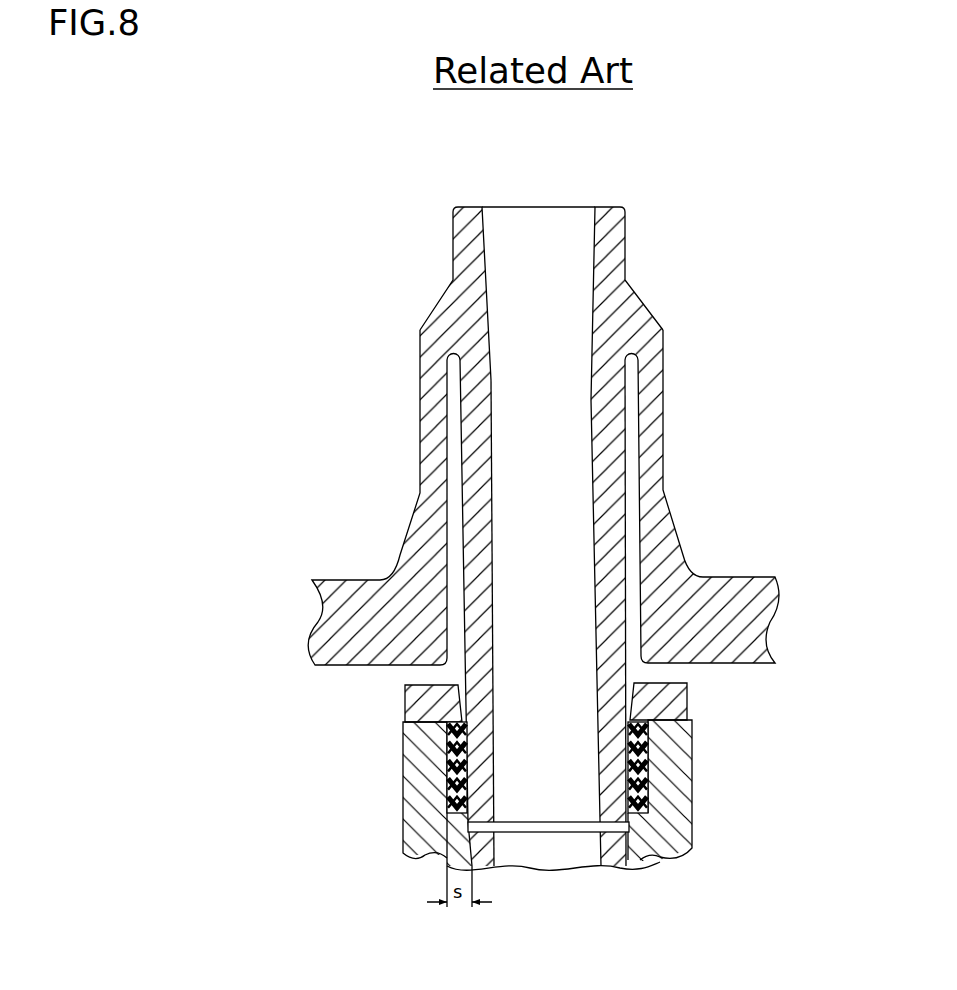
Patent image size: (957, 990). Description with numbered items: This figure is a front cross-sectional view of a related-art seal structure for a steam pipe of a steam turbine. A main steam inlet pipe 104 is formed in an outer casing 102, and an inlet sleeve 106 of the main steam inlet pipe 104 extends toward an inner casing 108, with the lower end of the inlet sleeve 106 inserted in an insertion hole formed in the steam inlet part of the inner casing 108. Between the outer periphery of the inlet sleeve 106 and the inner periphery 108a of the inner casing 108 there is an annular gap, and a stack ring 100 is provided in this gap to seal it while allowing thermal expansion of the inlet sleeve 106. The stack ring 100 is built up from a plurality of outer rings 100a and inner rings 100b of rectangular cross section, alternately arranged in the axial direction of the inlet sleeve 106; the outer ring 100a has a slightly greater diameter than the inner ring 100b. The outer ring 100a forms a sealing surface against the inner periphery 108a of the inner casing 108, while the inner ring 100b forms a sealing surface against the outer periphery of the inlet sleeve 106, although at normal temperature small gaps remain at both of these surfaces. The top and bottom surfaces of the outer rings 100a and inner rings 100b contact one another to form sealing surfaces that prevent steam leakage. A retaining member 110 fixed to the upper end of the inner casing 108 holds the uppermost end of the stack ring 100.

The stack ring 100 is at (741, 785).
The outer ring 100a is at (642, 788).
The inner ring 100b is at (637, 815).
The outer casing 102 is at (340, 583).
The main steam inlet pipe 104 is at (468, 236).
The inlet sleeve 106 is at (470, 472).
The inner casing 108 is at (403, 815).
The inner periphery 108a is at (637, 807).
The retaining member 110 is at (403, 704).